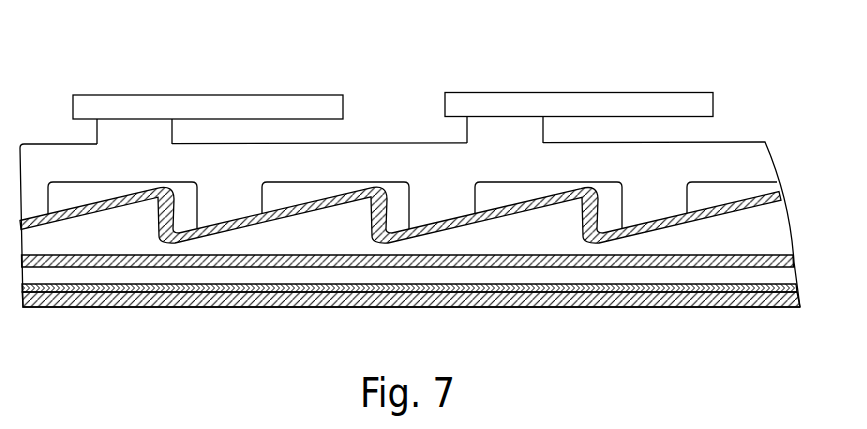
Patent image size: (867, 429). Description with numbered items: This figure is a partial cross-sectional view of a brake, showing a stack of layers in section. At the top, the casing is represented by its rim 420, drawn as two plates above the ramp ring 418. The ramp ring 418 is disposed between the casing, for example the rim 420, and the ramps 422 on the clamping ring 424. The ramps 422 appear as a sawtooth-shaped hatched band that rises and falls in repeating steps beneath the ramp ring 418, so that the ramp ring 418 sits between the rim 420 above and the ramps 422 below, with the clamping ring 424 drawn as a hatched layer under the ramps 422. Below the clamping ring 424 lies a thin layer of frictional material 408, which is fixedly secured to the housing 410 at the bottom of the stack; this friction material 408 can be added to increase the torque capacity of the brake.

The frictional material 408 is at (798, 284).
The housing 410 is at (740, 290).
The ramp ring 418 is at (748, 160).
The rim 420 is at (682, 103).
The ramps 422 is at (717, 213).
The clamping ring 424 is at (723, 253).